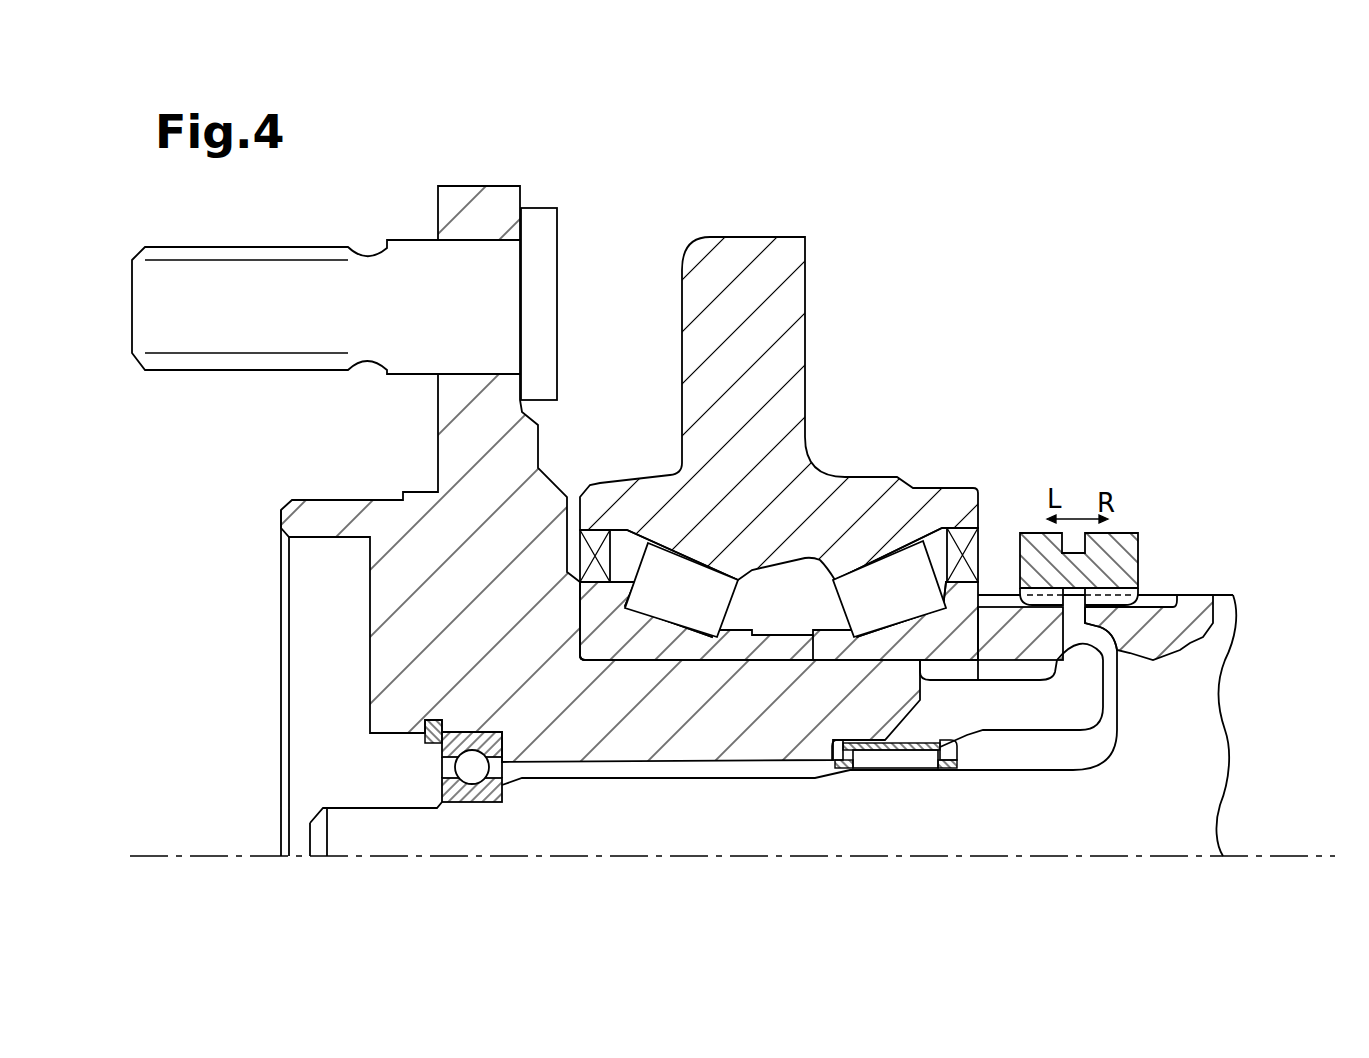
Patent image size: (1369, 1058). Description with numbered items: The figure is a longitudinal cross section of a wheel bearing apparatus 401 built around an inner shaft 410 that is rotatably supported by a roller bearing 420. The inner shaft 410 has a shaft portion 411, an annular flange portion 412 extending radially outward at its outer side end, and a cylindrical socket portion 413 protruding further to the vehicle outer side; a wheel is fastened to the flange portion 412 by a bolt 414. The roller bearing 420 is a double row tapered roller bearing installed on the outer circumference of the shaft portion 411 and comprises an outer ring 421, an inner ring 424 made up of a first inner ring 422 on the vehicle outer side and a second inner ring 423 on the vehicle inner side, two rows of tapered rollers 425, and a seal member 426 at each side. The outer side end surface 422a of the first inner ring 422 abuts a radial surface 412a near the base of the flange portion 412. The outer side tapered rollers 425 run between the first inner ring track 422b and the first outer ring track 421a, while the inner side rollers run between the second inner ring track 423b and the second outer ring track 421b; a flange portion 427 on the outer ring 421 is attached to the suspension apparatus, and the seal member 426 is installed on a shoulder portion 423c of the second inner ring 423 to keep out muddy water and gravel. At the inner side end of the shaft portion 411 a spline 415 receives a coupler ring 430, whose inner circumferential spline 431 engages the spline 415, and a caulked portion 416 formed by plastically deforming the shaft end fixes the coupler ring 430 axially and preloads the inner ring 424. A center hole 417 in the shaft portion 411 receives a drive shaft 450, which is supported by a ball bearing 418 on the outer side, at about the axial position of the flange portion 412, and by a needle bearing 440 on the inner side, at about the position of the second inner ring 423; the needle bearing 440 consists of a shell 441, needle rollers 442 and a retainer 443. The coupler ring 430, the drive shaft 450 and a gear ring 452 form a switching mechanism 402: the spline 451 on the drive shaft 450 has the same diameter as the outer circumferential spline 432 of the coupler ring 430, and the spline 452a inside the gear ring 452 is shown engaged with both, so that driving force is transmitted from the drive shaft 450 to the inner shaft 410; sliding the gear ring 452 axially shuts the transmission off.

The wheel bearing apparatus 401 is at (957, 200).
The switching mechanism 402 is at (1225, 495).
The inner shaft 410 is at (680, 765).
The shaft portion 411 is at (752, 765).
The flange portion 412 is at (438, 200).
The radial surface 412a is at (587, 662).
The cylindrical socket portion 413 is at (340, 484).
The bolt 414 is at (557, 228).
The spline 415 is at (957, 683).
The caulked portion 416 is at (1117, 705).
The center hole 417 is at (1077, 771).
The ball bearing 418 is at (476, 802).
The roller bearing 420 is at (880, 465).
The outer ring 421 is at (818, 483).
The first outer ring track 421a is at (672, 553).
The second outer ring track 421b is at (900, 530).
The first inner ring 422 is at (778, 652).
The outer side end surface 422a is at (575, 632).
The first inner ring track 422b is at (680, 618).
The second inner ring 423 is at (838, 662).
The second inner ring track 423b is at (890, 614).
The shoulder portion 423c is at (935, 588).
The inner ring 424 is at (853, 710).
The tapered rollers 425 is at (693, 570).
The seal member 426 is at (596, 495).
The flange portion 427 is at (805, 280).
The coupler ring 430 is at (1083, 662).
The inner circumferential spline 431 is at (1015, 735).
The outer circumferential spline 432 is at (990, 607).
The needle bearing 440 is at (936, 792).
The shell 441 is at (958, 748).
The needle rollers 442 is at (926, 770).
The retainer 443 is at (960, 768).
The drive shaft 450 is at (1213, 707).
The spline 451 is at (1165, 585).
The gear ring 452 is at (1125, 533).
The spline 452a is at (1140, 590).